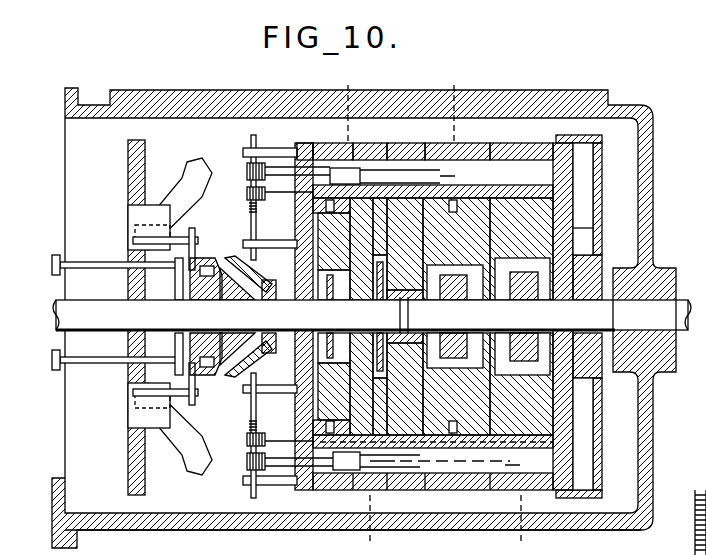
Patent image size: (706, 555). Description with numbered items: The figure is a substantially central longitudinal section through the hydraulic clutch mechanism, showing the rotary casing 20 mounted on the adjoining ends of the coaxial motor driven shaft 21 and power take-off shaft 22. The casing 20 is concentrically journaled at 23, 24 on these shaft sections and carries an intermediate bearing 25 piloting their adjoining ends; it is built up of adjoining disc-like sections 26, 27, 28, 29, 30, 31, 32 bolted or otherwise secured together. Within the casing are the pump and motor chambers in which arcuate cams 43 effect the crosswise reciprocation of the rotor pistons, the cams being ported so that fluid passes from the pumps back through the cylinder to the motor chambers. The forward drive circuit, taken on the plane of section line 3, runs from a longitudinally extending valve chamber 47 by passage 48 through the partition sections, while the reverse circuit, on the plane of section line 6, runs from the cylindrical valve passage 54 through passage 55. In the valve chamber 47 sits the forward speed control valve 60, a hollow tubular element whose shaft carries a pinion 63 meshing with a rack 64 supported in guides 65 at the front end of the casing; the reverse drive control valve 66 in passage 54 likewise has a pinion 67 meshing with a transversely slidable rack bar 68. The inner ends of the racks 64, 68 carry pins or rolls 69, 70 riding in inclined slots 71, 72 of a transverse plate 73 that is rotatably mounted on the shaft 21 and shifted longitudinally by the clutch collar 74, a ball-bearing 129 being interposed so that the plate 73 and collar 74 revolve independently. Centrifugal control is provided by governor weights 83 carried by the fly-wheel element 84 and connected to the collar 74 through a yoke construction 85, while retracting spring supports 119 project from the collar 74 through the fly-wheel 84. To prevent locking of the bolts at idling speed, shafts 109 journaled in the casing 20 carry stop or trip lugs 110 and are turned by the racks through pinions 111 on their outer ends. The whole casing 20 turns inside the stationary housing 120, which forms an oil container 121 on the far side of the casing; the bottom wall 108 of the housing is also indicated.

The section line 3- 3 is at (400, 105).
The section line 6- 6 is at (444, 525).
The casing 20 is at (578, 228).
The motor driven shaft 21 is at (372, 315).
The power take-off shaft 22 is at (658, 315).
The journal 23 is at (302, 300).
The journal 24 is at (580, 300).
The intermediate bearing 25 is at (420, 300).
The disc-like section 26 is at (305, 143).
The disc-like section 27 is at (353, 140).
The disc-like section 28 is at (380, 141).
The disc-like section 29 is at (430, 143).
The disc-like section 30 is at (486, 141).
The disc-like section 31 is at (492, 140).
The disc-like section 32 is at (570, 137).
The arcuate cam 43 is at (553, 422).
The valve chamber 47 is at (345, 176).
The passage 48 is at (400, 172).
The cylindrical valve passage 54 is at (380, 467).
The passage 55 is at (452, 467).
The forward speed control valve 60 is at (301, 145).
The pinion 63 is at (246, 172).
The rack 64 is at (250, 226).
The guides 65 is at (277, 245).
The reverse drive control valve 66 is at (332, 487).
The pinion 67 is at (245, 460).
The rack bar 68 is at (256, 417).
The pin or roll 69 is at (256, 280).
The pin or roll 70 is at (258, 350).
The inclined slot 71 is at (246, 262).
The inclined slot 72 is at (246, 370).
The transverse plate 73 is at (275, 290).
The clutch collar 74 is at (165, 354).
The governor weights 83 is at (186, 162).
The fly-wheel element 84 is at (130, 151).
The yoke construction 85 is at (196, 394).
The housing bottom 108 is at (353, 542).
The shaft 109 is at (497, 184).
The stop or trip lug 110 is at (440, 173).
The pinion 111 is at (244, 193).
The retracting spring support 119 is at (82, 265).
The stationary housing 120 is at (650, 205).
The oil container 121 is at (598, 164).
The ball-bearing 129 is at (165, 279).